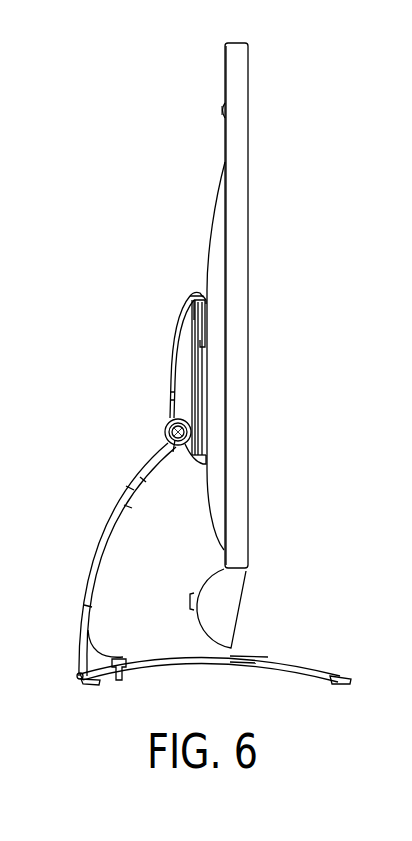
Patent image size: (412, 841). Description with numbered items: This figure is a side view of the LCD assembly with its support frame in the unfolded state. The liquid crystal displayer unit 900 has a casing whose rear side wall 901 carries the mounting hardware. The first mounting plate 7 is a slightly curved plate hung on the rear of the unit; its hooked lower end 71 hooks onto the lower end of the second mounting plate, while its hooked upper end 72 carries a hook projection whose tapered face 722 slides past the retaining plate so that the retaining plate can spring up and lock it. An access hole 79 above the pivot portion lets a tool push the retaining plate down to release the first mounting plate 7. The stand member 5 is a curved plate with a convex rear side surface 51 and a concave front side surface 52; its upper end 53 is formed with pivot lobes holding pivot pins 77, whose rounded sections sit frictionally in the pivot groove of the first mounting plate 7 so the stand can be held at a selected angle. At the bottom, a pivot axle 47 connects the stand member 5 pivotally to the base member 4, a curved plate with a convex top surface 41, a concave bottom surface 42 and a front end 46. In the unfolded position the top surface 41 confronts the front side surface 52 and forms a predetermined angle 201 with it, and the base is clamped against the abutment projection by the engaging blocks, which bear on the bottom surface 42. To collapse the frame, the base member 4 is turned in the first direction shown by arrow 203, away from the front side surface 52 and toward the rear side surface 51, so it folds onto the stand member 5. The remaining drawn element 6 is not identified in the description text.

The liquid crystal displayer unit 900 is at (240, 103).
The rear side wall 901 is at (225, 76).
The first mounting plate 7 is at (169, 324).
The hooked upper end 72 is at (200, 292).
The tapered face 722 is at (207, 300).
The access hole 79 is at (170, 392).
The pivot pins 77 is at (186, 428).
The upper end 53 is at (164, 431).
The hooked lower end 71 is at (192, 466).
The stand member 5 is at (95, 532).
The rear side surface 51 is at (127, 486).
The front side surface 52 is at (141, 480).
The predetermined angle 201 is at (108, 591).
The arrow 203 is at (66, 646).
The pivot axle 47 is at (94, 683).
The base member 4 is at (205, 667).
The top surface 41 is at (268, 655).
The bottom surface 42 is at (255, 662).
The front end 46 is at (333, 675).
The locking member 6 is at (132, 671).